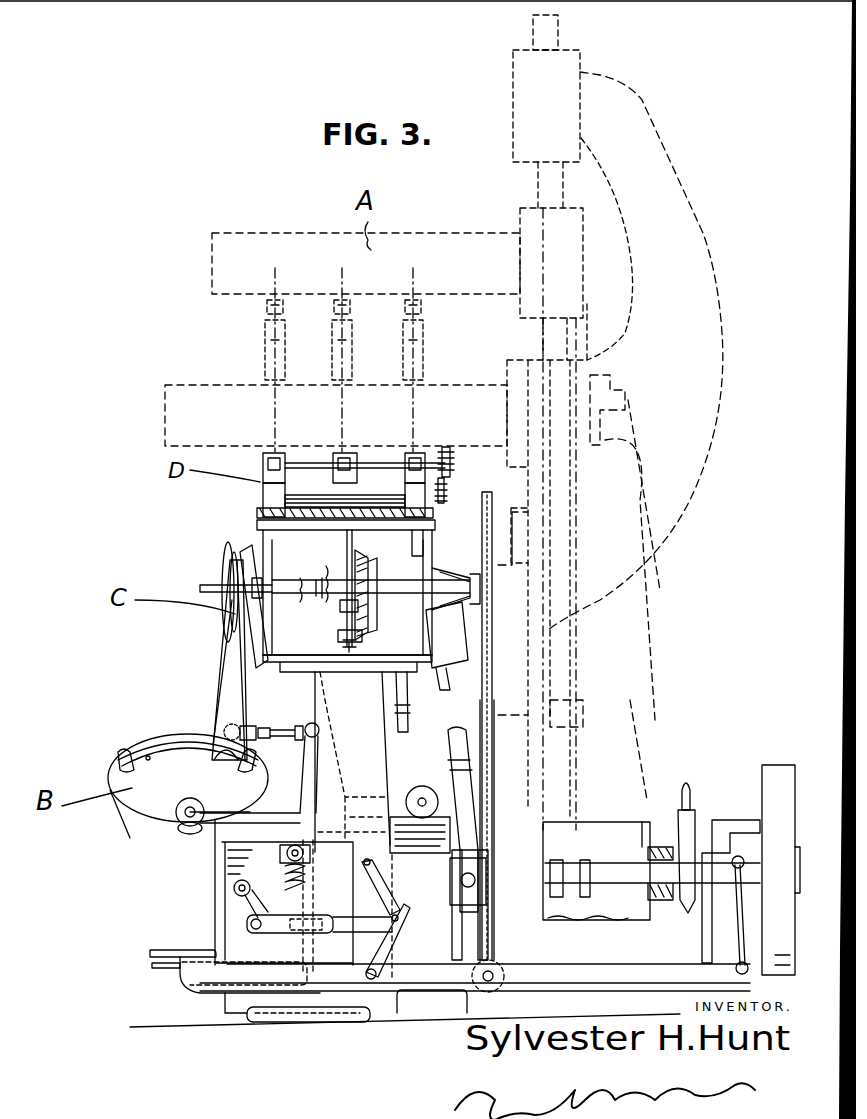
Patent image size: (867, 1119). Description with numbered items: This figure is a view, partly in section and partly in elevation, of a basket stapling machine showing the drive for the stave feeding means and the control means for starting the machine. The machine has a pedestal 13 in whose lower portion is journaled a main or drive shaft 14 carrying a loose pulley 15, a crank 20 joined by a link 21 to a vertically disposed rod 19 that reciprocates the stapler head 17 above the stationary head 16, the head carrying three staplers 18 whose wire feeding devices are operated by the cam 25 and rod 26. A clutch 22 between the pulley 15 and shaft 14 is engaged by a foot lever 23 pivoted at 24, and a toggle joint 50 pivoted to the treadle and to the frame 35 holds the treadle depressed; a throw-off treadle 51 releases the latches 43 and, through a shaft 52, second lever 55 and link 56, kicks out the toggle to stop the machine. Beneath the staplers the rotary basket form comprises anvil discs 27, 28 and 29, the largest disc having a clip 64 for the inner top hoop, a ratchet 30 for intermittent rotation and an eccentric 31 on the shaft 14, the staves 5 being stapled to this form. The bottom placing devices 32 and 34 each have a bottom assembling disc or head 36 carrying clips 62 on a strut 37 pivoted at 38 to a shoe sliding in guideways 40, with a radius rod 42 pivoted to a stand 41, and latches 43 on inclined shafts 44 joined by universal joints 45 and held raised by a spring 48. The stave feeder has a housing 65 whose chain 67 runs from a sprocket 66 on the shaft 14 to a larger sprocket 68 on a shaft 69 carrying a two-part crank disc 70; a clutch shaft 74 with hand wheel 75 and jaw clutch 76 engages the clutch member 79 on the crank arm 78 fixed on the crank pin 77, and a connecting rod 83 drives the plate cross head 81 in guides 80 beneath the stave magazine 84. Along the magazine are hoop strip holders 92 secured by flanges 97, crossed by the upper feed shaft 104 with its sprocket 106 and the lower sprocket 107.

The staves 5 is at (384, 496).
The pedestal 13 is at (600, 602).
The main or drive shaft 14 is at (642, 896).
The pulley 15 is at (772, 775).
The stationary head 16 is at (176, 418).
The stapler head 17 is at (216, 258).
The staplers 18 is at (280, 344).
The vertically disposed rod 19 is at (550, 330).
The crank 20 is at (584, 906).
The link 21 is at (570, 838).
The clutch 22 is at (740, 860).
The foot lever 23 is at (446, 978).
The pivot 24 is at (486, 978).
The cam 25 is at (688, 910).
The rod 26 is at (686, 758).
The anvil disc 27 is at (266, 721).
The anvil disc 28 is at (286, 722).
The anvil disc 29 is at (388, 700).
The ratchet 30 is at (448, 680).
The eccentric 31 is at (483, 905).
The bottom placing device 32 is at (214, 646).
The bottom placing device 34 is at (154, 822).
The frame 35 is at (222, 1004).
The bottom assembling disc or head 36 is at (242, 554).
The strut 37 is at (222, 676).
The pivot 38 is at (422, 796).
The guideways 40 is at (222, 838).
The stand 41 is at (306, 774).
The radius rod 42 is at (230, 722).
The pivoted latch 43 is at (278, 858).
The inclined shafts 44 is at (306, 858).
The universal joints 45 is at (306, 874).
The spring 48 is at (290, 936).
The toggle joint 50 is at (398, 928).
The throw-off lever or treadle 51 is at (180, 978).
The shaft 52 is at (236, 890).
The second lever 55 is at (246, 904).
The link 56 is at (342, 936).
The clips 62 is at (118, 756).
The clip 64 is at (404, 720).
The housing 65 is at (320, 670).
The sprocket 66 is at (384, 758).
The chain 67 is at (494, 694).
The larger sprocket 68 is at (492, 510).
The shaft 69 is at (398, 588).
The two-part crank disc 70 is at (368, 568).
The clutch shaft 74 is at (298, 596).
The hand wheel 75 is at (224, 572).
The jaw clutch 76 is at (312, 586).
The crank pin 77 is at (338, 638).
The crank arm 78 is at (338, 610).
The clutch member 79 is at (331, 584).
The guides 80 is at (260, 522).
The plate cross head 81 is at (418, 530).
The connecting rod 83 is at (344, 558).
The stave magazine or hopper 84 is at (262, 494).
The hoop strip holders and guides 92 is at (282, 454).
The flanges 97 is at (308, 501).
The upper feed shaft 104 is at (377, 454).
The sprocket 106 is at (444, 456).
The sprocket 107 is at (446, 482).